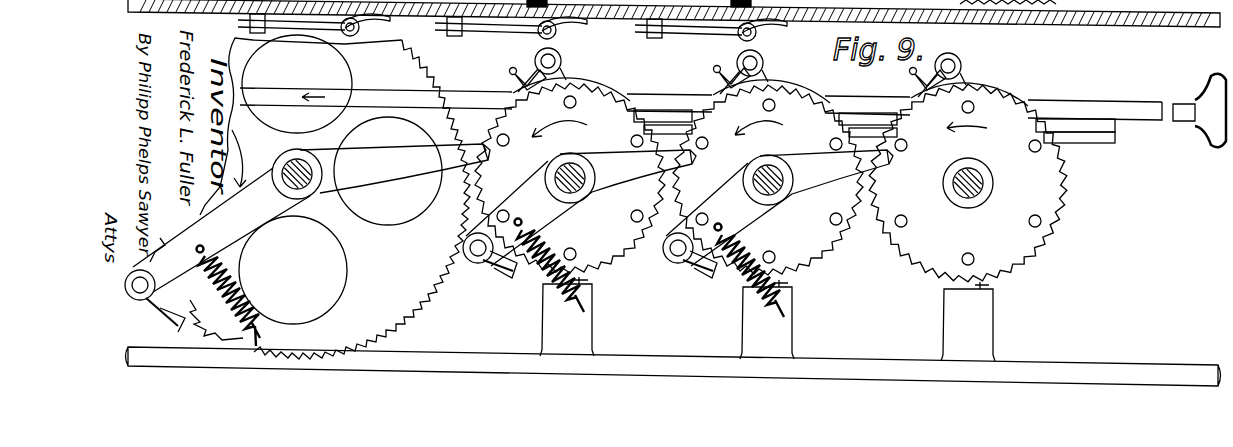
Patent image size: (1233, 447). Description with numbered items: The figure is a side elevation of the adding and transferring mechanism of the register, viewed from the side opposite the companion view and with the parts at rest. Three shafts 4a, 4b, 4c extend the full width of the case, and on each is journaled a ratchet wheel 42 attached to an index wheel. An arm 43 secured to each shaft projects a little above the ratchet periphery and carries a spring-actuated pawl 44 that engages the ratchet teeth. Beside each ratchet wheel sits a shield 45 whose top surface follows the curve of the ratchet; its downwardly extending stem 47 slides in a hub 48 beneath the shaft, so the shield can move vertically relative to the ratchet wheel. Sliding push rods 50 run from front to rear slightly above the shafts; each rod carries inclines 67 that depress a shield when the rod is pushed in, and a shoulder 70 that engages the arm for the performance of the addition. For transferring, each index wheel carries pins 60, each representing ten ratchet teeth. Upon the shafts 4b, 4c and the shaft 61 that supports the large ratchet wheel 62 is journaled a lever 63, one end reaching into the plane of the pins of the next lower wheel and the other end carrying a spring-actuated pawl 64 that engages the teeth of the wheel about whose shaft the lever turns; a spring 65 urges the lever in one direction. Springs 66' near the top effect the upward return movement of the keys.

The shaft 4a is at (972, 196).
The shaft 4b is at (760, 175).
The shaft 4c is at (560, 173).
The ratchet wheel 42 is at (759, 158).
The arm 43 is at (756, 72).
The spring actuated pawl 44 is at (725, 66).
The shield 45 is at (1022, 102).
The stem 47 is at (992, 289).
The hub 48 is at (767, 322).
The push rods 50 is at (701, 84).
The pins 60 is at (1115, 140).
The shaft 61 is at (463, 220).
The large ratchet wheel 62 is at (310, 198).
The lever 63 is at (596, 174).
The spring-actuated pawl 64 is at (421, 286).
The spring 65 is at (491, 283).
The springs 66' is at (512, 29).
The inclines 67 is at (890, 119).
The shoulder 70 is at (898, 133).